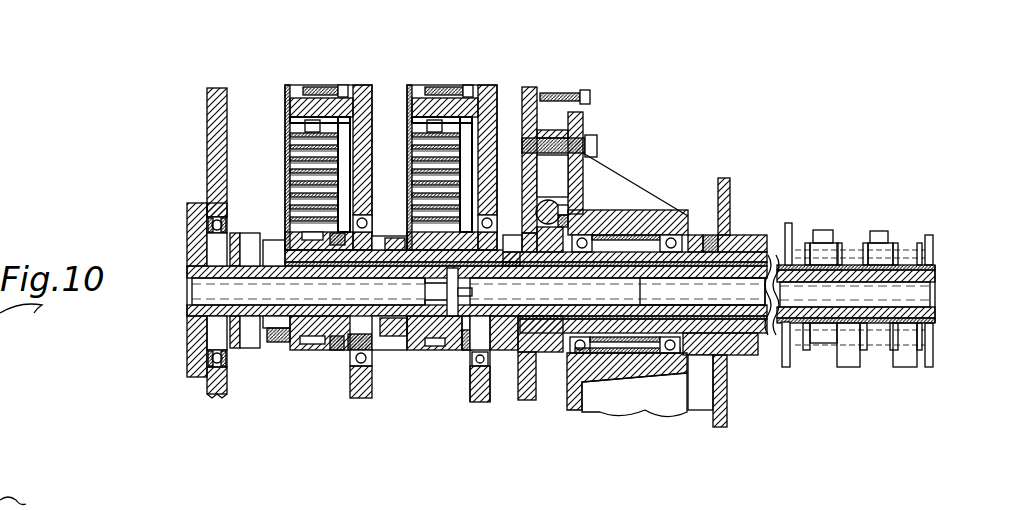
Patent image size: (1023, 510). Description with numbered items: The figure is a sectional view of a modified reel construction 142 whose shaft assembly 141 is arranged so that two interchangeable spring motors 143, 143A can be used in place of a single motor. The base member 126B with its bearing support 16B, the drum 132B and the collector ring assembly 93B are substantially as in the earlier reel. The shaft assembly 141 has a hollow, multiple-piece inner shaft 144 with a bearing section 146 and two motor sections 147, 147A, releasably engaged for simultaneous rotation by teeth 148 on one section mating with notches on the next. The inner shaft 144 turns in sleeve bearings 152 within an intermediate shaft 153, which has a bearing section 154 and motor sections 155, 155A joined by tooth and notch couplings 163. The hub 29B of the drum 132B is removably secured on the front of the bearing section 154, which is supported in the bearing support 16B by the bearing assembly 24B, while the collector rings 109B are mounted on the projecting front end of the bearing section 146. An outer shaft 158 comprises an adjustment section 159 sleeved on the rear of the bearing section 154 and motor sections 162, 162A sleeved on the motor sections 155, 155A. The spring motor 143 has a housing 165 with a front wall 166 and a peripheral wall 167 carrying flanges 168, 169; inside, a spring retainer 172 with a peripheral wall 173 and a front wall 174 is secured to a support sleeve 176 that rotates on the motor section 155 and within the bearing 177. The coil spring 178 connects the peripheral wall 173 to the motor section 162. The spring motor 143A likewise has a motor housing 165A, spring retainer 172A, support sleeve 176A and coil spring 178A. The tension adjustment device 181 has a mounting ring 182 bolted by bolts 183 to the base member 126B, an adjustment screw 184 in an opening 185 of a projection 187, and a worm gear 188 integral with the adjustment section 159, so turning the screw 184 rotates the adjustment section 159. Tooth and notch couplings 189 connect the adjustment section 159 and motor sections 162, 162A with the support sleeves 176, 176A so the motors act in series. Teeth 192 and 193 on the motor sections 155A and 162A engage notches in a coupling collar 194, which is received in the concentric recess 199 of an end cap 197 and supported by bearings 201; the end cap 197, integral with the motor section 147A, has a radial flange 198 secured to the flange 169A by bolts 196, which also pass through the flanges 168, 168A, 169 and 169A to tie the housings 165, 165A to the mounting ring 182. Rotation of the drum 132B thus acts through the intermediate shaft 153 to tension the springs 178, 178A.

The inner shaft 144 is at (938, 273).
The motor section 147A is at (299, 302).
The motor section 147 is at (422, 293).
The teeth 148 is at (470, 290).
The bearing section 146 is at (552, 300).
The bearing section 154 is at (658, 334).
The sleeve bearings 152 is at (778, 300).
The radial flange 198 is at (207, 113).
The end cap 197 is at (173, 158).
The concentric recess 199 is at (198, 245).
The coupling collar 194 is at (230, 330).
The bearings 201 is at (232, 364).
The teeth 192 is at (258, 330).
The teeth 193 is at (300, 340).
The outer shaft 158 is at (335, 345).
The flange 169A is at (288, 88).
The motor housing 165A is at (316, 95).
The spring motor 143A is at (318, 78).
The flange 168A is at (350, 104).
The bolts 196 is at (338, 93).
The coil spring 178A is at (296, 155).
The spring retainer 172A is at (350, 172).
The motor section 162A is at (288, 238).
The support sleeve 176A is at (338, 232).
The tooth and notch couplings 163 is at (380, 250).
The flange 169 is at (426, 88).
The housing 165 is at (483, 100).
The spring motor 143 is at (454, 55).
The flange 168 is at (490, 104).
The peripheral wall 167 is at (431, 118).
The coil spring 178 is at (428, 155).
The spring retainer 172 is at (475, 178).
The peripheral wall 173 is at (478, 115).
The front wall 174 is at (478, 195).
The support sleeve 176 is at (484, 232).
The motor section 162 is at (410, 238).
The motor section 155 is at (458, 348).
The motor section 155A is at (359, 350).
The shaft assembly 141 is at (372, 385).
The front wall 166 is at (522, 145).
The bolts 183 is at (583, 140).
The projection 187 is at (550, 201).
The tension adjustment device 181 is at (558, 204).
The adjustment screw 184 is at (566, 208).
The opening 185 is at (564, 215).
The bearing assembly 24B is at (655, 222).
The bearing support 16B is at (640, 210).
The hub 29B is at (730, 238).
The collector ring assembly 93B is at (816, 186).
The intermediate shaft 153 is at (782, 336).
The collector rings 109B is at (902, 242).
The tooth and notch couplings 189 is at (488, 358).
The bearing 177 is at (488, 370).
The mounting ring 182 is at (530, 385).
The adjustment section 159 is at (543, 355).
The worm gear 188 is at (588, 388).
The base member 126B is at (618, 420).
The drum 132B is at (742, 396).
The reel construction 142 is at (462, 418).